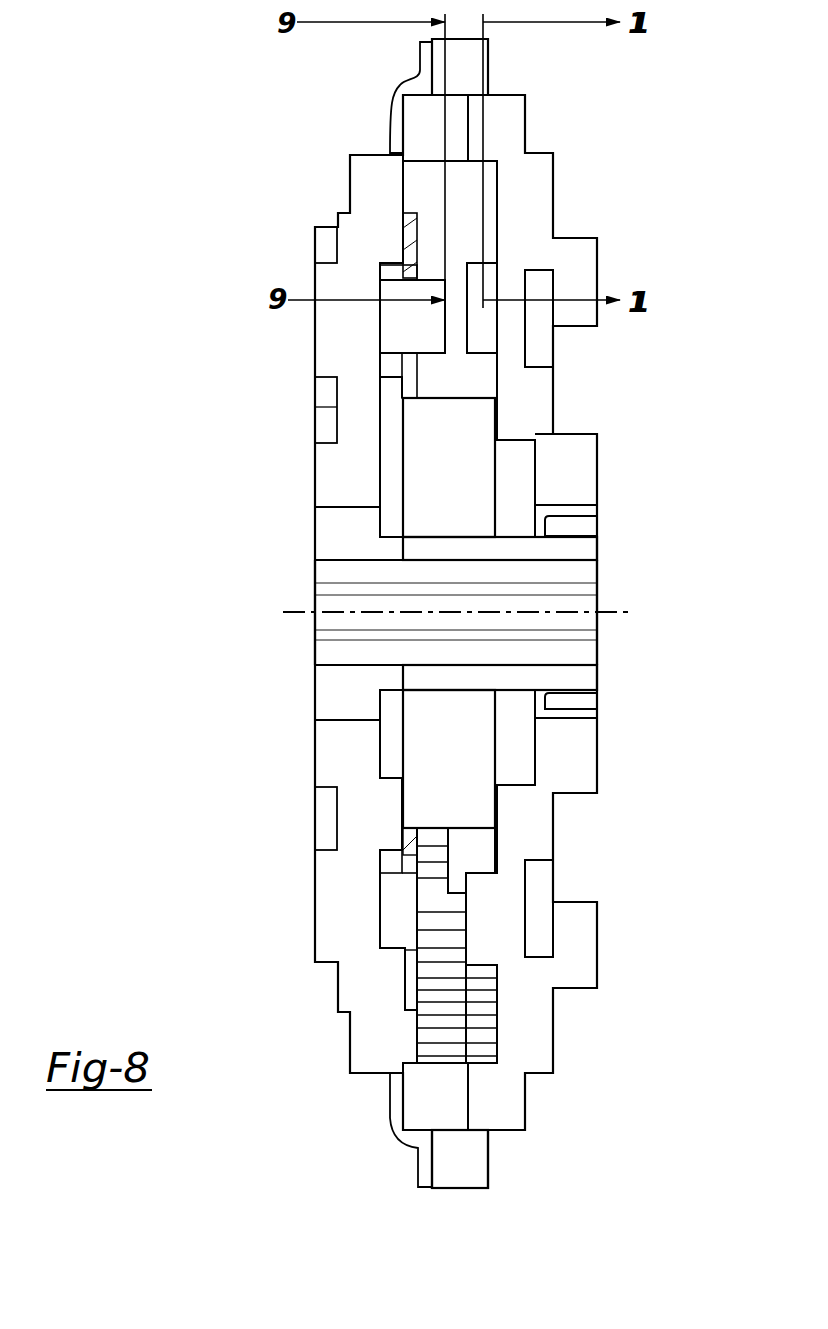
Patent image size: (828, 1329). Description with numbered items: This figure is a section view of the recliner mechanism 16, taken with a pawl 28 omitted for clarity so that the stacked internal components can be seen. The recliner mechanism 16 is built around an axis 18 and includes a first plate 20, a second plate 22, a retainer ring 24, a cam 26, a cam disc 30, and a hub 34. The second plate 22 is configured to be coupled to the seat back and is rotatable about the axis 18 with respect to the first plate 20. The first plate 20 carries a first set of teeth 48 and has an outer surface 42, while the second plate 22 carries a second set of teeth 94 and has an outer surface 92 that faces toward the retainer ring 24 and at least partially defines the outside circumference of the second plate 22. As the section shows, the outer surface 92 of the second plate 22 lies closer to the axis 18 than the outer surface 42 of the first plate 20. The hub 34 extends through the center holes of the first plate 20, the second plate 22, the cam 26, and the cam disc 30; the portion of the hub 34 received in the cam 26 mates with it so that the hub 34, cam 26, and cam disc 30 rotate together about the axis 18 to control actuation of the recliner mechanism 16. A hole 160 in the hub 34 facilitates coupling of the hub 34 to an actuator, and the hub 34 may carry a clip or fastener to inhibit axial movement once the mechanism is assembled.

The recliner mechanism 16 is at (640, 171).
The axis 18 is at (302, 612).
The first plate 20 is at (597, 460).
The second plate 22 is at (313, 343).
The retainer ring 24 is at (420, 50).
The cam 26 is at (392, 423).
The pawl 28 is at (388, 315).
The cam disc 30 is at (413, 243).
The hub 34 is at (315, 533).
The outer surface 42 is at (465, 1190).
The first set of teeth 48 is at (485, 1050).
The outer surface 92 is at (423, 1130).
The second set of teeth 94 is at (445, 1038).
The hole 160 is at (330, 572).